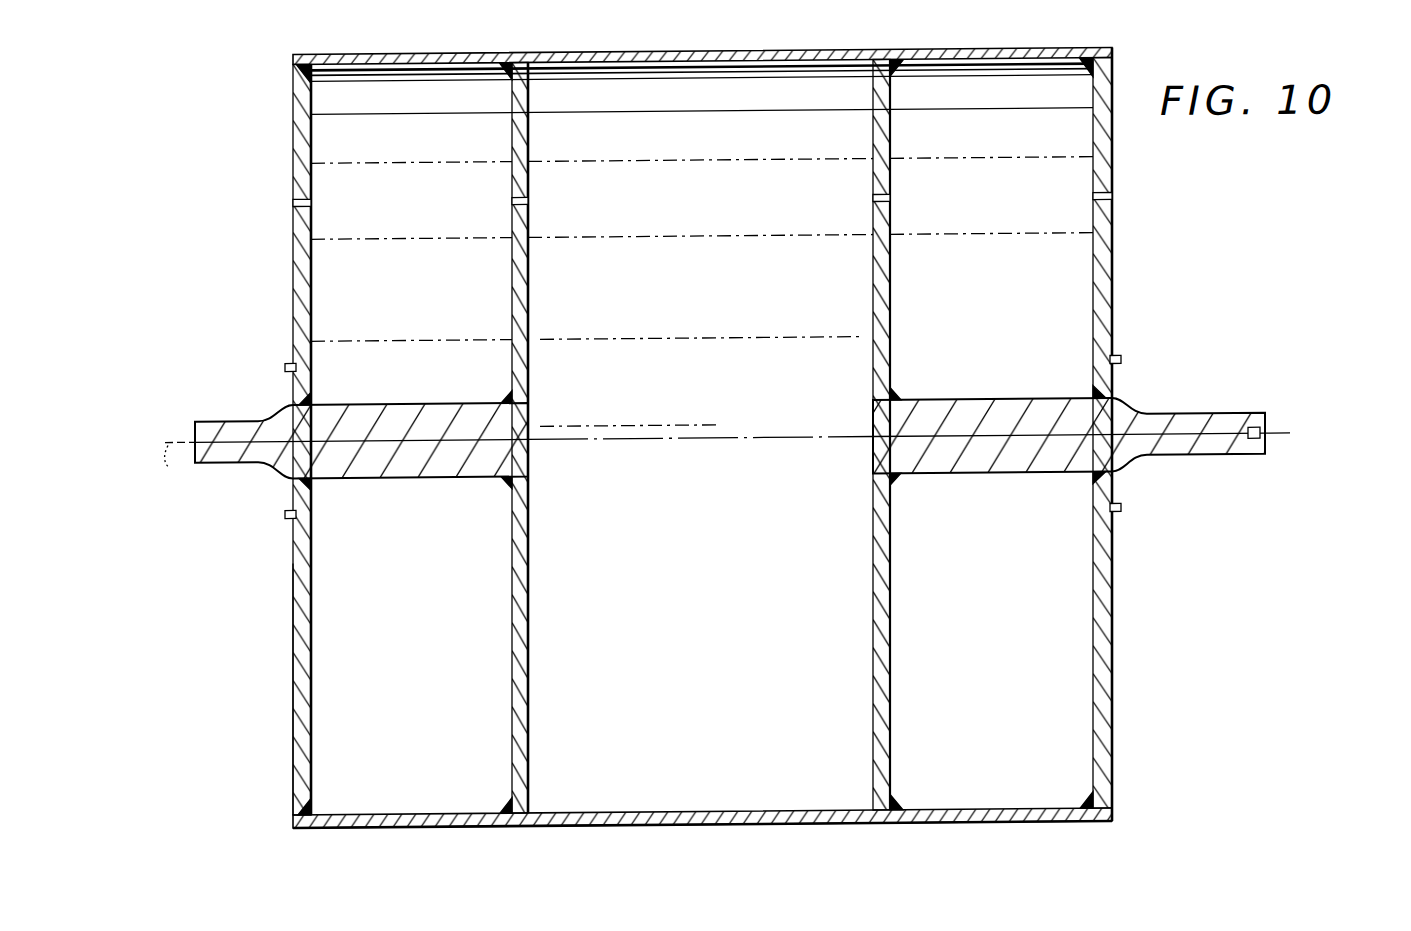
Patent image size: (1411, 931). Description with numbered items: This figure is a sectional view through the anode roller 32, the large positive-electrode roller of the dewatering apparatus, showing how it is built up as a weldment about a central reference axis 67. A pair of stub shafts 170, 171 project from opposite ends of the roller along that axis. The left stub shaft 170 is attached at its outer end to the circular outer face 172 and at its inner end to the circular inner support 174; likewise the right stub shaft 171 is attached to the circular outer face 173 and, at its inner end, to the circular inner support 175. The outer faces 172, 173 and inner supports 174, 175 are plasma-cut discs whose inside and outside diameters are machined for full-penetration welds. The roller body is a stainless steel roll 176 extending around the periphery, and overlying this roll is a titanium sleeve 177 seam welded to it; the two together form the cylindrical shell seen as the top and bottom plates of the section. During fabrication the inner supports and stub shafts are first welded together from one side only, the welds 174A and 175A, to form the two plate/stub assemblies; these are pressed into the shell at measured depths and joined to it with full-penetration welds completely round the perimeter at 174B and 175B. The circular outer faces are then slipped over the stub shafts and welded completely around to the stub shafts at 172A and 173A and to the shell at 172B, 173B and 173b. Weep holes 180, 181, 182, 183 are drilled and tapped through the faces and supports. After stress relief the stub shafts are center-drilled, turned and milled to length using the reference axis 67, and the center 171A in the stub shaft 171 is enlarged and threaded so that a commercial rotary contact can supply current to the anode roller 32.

The anode roller 32 is at (293, 652).
The central reference axis 67 is at (160, 470).
The stub shaft 170 is at (236, 418).
The stub shaft 171 is at (1195, 414).
The center 171A is at (1268, 438).
The circular outer face 172 is at (293, 257).
The full penetration weld 172A is at (298, 396).
The full penetration weld 172B is at (300, 80).
The circular outer face 173 is at (1112, 289).
The full penetration weld 173A is at (1110, 396).
The full penetration weld 173B is at (1112, 804).
The full penetration weld 173b is at (293, 815).
The circular inner support 174 is at (528, 306).
The one-side weld 174A is at (528, 397).
The full penetration weld 174B is at (506, 70).
The circular inner support 175 is at (873, 285).
The one-side weld 175A is at (873, 397).
The full penetration weld 175B is at (894, 72).
The stainless steel roll 176 is at (708, 64).
The titanium sleeve 177 is at (419, 51).
The weep hole 180 is at (311, 201).
The weep hole 181 is at (528, 201).
The weep hole 182 is at (890, 201).
The weep hole 183 is at (1112, 201).